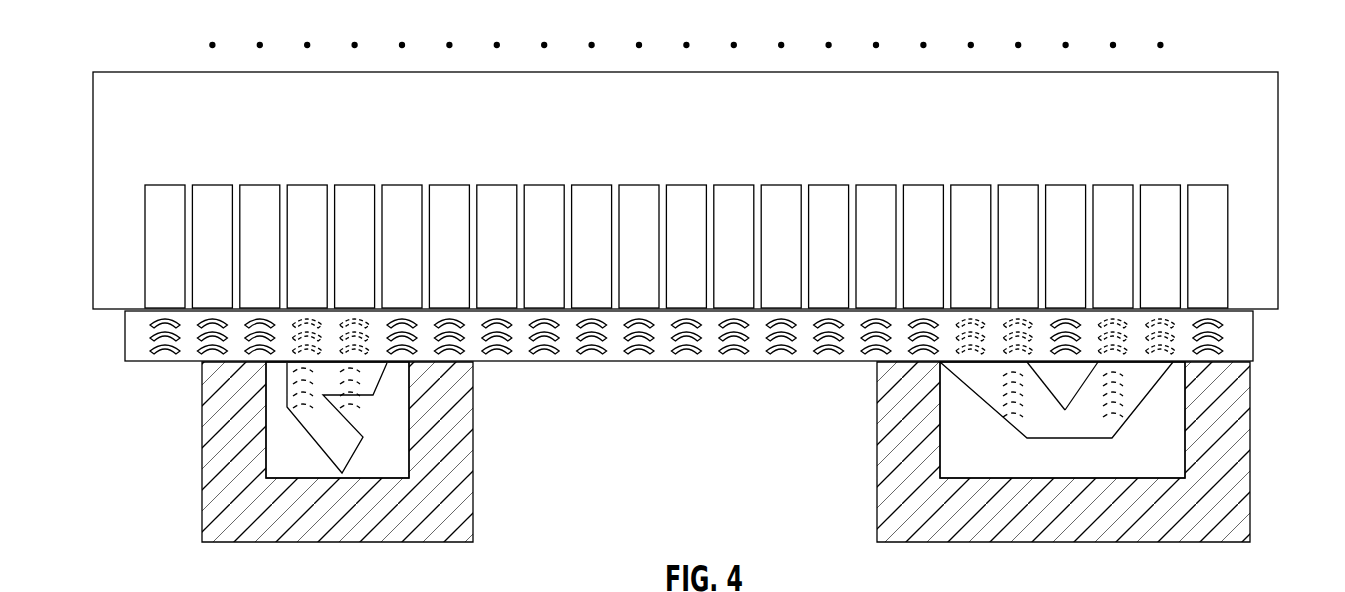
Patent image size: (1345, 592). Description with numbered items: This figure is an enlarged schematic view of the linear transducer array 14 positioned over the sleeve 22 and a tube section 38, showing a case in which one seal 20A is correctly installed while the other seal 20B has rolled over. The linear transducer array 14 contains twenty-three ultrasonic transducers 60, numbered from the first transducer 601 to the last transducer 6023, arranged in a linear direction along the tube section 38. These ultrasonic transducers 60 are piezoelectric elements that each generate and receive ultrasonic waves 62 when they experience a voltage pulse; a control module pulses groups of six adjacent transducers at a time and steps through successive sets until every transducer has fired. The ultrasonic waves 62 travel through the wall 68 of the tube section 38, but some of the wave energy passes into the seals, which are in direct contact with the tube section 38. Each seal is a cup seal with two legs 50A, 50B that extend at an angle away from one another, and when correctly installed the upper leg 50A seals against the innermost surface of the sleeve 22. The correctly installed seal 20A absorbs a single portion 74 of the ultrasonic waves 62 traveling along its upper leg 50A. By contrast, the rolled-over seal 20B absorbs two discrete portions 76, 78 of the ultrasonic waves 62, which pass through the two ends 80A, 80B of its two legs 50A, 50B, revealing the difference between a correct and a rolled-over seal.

The linear transducer array 14 is at (1226, 72).
The ultrasonic transducers 60 is at (634, 166).
The first ultrasonic transducer 601 is at (152, 197).
The twenty-third ultrasonic transducer 6023 is at (1185, 166).
The sleeve 22 is at (1237, 335).
The ultrasonic waves 62 is at (661, 287).
The wall 68 is at (705, 350).
The portion of ultrasonic waves 74 is at (278, 381).
The first discrete portion of ultrasonic waves 76 is at (948, 354).
The second discrete portion of ultrasonic waves 78 is at (1171, 312).
The tube section 38 is at (473, 530).
The correctly installed seal 20A is at (387, 365).
The rolled-over seal 20B is at (1127, 372).
The upper leg 50A is at (396, 422).
The second leg 50B is at (1107, 290).
The first leg end 80A is at (1017, 362).
The second leg end 80B is at (1140, 362).